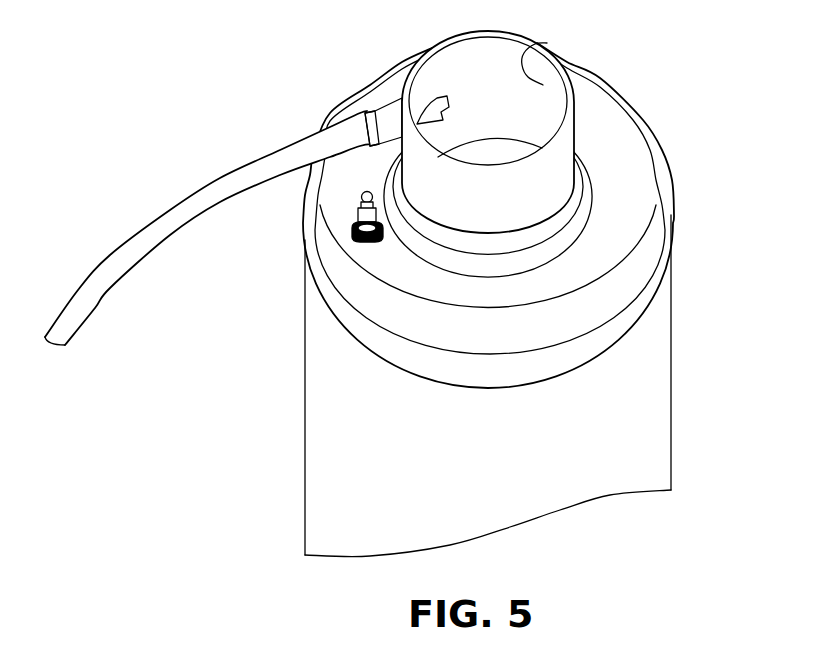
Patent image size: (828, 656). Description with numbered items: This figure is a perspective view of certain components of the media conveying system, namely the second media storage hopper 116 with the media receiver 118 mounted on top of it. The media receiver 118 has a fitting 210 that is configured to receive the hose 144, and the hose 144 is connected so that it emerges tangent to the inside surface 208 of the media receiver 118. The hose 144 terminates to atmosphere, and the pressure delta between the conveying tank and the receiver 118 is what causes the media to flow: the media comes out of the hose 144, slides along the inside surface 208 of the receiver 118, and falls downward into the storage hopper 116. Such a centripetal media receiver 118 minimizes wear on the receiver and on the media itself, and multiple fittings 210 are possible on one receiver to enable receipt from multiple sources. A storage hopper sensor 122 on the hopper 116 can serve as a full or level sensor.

The second media storage hopper 116 is at (511, 452).
The media receiver 118 is at (511, 209).
The storage hopper sensor 122 is at (358, 207).
The hose 144 is at (173, 203).
The inside surface 208 is at (547, 43).
The fitting 210 is at (365, 111).